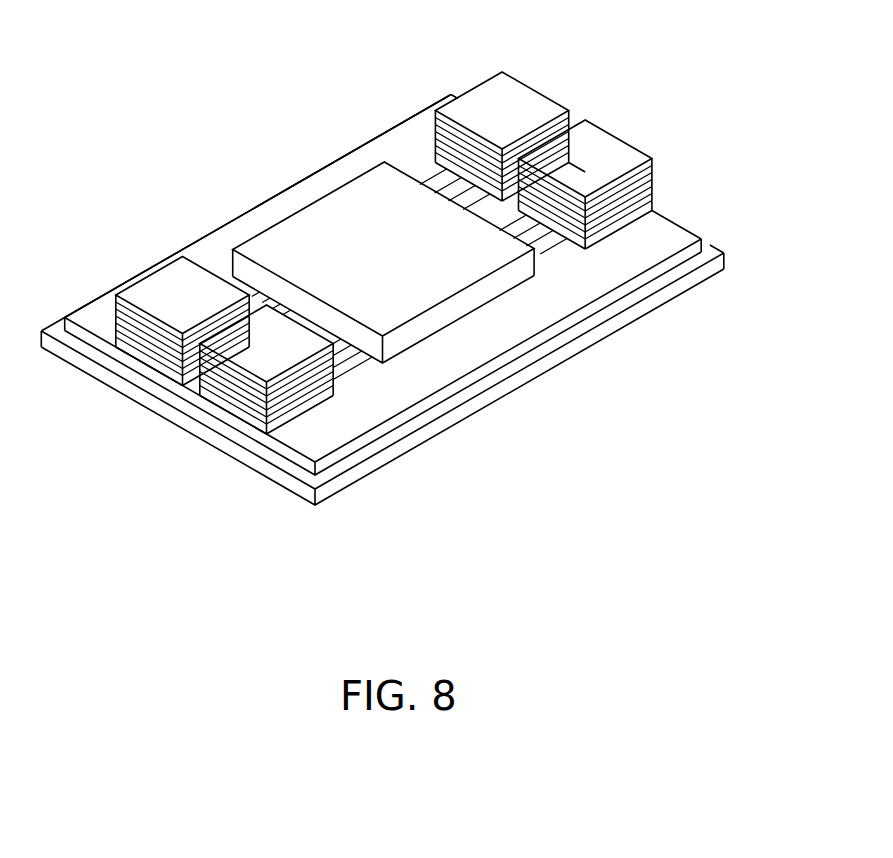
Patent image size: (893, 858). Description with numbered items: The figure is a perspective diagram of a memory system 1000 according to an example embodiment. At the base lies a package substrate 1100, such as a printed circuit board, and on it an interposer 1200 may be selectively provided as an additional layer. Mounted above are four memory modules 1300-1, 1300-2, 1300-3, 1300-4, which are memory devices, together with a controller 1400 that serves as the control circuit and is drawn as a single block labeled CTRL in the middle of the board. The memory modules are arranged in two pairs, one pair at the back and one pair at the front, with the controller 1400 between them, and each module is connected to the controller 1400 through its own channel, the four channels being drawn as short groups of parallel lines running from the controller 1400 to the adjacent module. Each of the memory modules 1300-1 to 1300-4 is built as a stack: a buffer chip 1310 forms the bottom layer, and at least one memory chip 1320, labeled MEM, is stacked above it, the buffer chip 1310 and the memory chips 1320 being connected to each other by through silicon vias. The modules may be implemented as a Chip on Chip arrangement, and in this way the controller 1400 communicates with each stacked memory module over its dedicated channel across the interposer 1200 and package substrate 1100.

The memory system 1000 is at (139, 112).
The package substrate 1100 is at (463, 412).
The interposer 1200 is at (534, 344).
The memory module 1300-1 is at (527, 95).
The memory module 1300-2 is at (639, 209).
The memory module 1300-3 is at (233, 353).
The memory module 1300-4 is at (150, 310).
The buffer chip 1310 is at (622, 223).
The memory chip 1320 is at (656, 181).
The controller 1400 is at (312, 222).